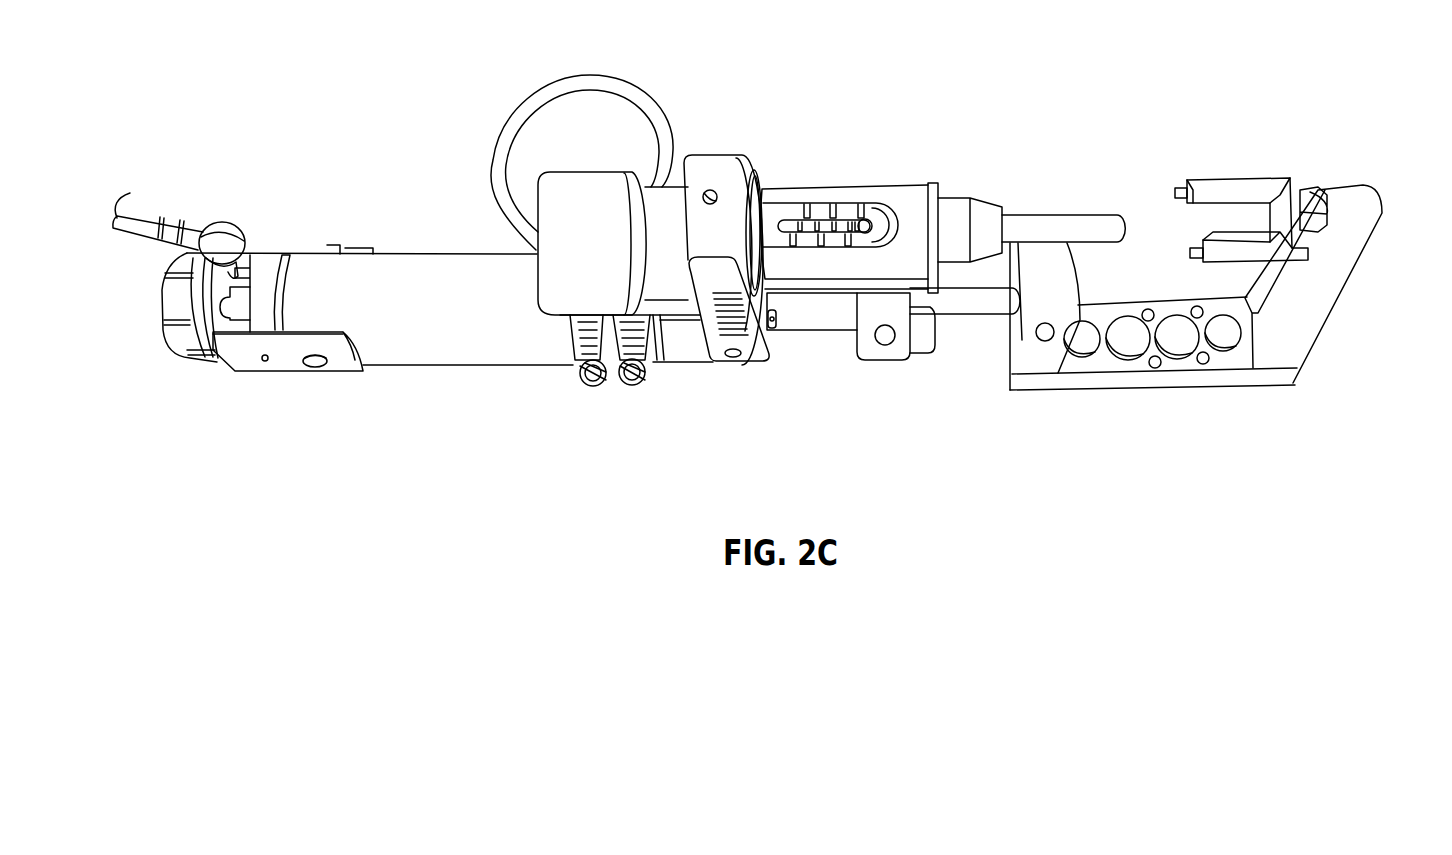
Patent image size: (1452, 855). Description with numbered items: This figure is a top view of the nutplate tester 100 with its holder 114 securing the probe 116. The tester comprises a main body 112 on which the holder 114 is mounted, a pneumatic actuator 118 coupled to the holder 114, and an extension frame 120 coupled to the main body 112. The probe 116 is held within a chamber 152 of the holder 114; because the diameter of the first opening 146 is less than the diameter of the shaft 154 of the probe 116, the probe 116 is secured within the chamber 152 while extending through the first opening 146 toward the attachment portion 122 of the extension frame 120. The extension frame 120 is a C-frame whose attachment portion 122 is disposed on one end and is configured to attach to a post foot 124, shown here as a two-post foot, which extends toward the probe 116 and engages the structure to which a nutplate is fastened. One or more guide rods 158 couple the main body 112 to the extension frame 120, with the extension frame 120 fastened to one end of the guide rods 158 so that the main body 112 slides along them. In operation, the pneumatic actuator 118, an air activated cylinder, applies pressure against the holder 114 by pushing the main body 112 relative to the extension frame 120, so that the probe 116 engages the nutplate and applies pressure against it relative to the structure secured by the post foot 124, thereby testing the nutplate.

The nutplate tester 100 is at (326, 51).
The main body 112 is at (724, 163).
The holder 114 is at (612, 165).
The probe 116 is at (893, 271).
The pneumatic actuator 118 is at (677, 335).
The extension frame 120 is at (1360, 330).
The attachment portion 122 is at (1318, 188).
The post foot 124 is at (1207, 190).
The first opening 146 is at (970, 272).
The chamber 152 is at (832, 282).
The shaft 154 is at (868, 186).
The guide rods 158 is at (973, 305).